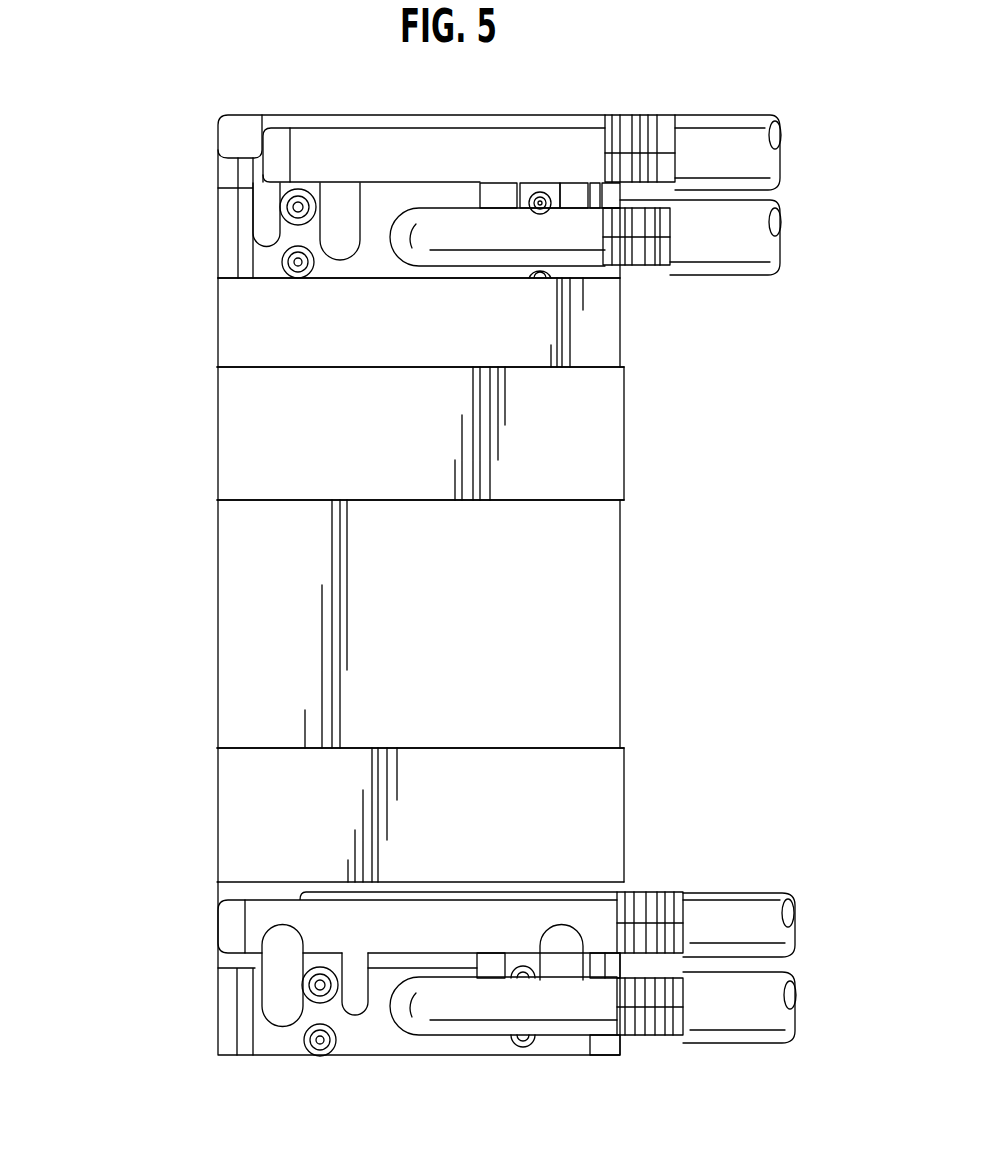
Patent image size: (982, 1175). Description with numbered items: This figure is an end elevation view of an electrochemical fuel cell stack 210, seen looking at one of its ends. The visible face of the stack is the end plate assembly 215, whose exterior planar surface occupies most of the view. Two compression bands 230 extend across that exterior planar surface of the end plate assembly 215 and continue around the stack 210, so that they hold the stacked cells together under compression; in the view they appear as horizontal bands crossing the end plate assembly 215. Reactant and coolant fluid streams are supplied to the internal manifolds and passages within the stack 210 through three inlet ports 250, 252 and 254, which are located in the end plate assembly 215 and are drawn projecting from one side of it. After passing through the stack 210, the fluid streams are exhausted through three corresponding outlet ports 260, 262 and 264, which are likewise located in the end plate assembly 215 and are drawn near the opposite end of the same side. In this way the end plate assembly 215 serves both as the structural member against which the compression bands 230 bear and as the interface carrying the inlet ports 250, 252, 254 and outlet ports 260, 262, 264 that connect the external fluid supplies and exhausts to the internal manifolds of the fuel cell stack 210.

The electrochemical fuel cell stack 210 is at (168, 222).
The end plate assembly 215 is at (605, 627).
The compression bands 230 is at (238, 779).
The inlet port 250 is at (655, 250).
The inlet port 252 is at (675, 150).
The inlet port 254 is at (655, 143).
The outlet port 260 is at (678, 993).
The outlet port 262 is at (675, 918).
The outlet port 264 is at (648, 890).